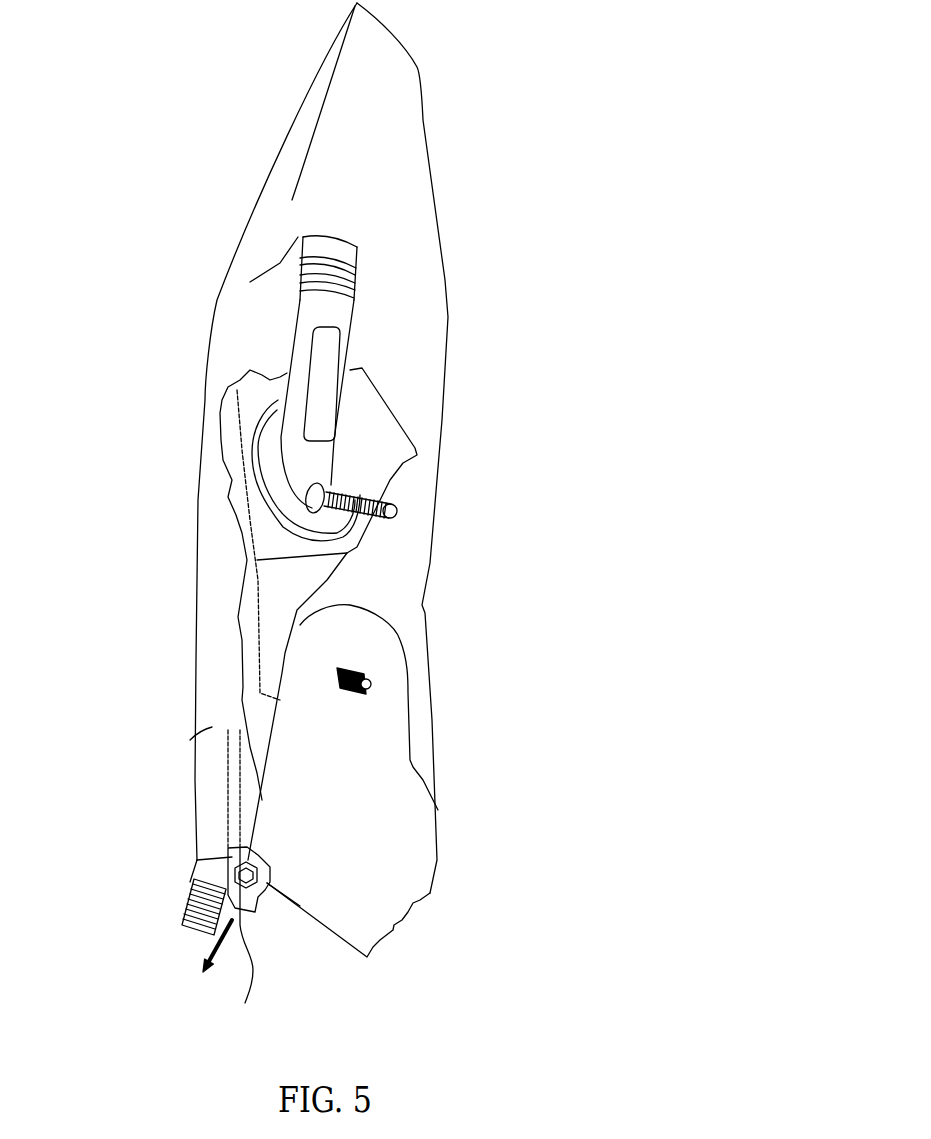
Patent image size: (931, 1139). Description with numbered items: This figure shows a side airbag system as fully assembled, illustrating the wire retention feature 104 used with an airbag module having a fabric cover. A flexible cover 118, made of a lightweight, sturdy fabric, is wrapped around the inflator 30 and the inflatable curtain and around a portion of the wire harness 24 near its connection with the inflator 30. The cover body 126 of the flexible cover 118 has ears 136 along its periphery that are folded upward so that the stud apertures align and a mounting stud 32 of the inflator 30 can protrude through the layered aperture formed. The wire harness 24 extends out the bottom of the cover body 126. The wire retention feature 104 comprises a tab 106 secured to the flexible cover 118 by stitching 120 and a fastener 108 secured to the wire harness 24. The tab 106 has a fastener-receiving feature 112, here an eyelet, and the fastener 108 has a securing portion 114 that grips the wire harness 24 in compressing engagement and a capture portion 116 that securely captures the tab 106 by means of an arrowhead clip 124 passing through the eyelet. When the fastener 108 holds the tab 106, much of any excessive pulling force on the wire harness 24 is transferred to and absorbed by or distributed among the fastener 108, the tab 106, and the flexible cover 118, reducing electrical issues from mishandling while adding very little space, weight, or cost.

The wire harness 24 is at (193, 907).
The inflator 30 is at (328, 312).
The mounting studs 32 is at (393, 498).
The wire retention feature 104 is at (294, 905).
The tab 106 is at (237, 870).
The fastener 108 is at (242, 941).
The fastener-receiving feature 112 is at (233, 880).
The securing portion 114 is at (200, 887).
The capture portion 116 is at (285, 858).
The flexible cover 118 is at (397, 222).
The stitching 120 is at (227, 793).
The arrowhead clip 124 is at (265, 872).
The cover body 126 is at (208, 500).
The ears 136 is at (387, 717).